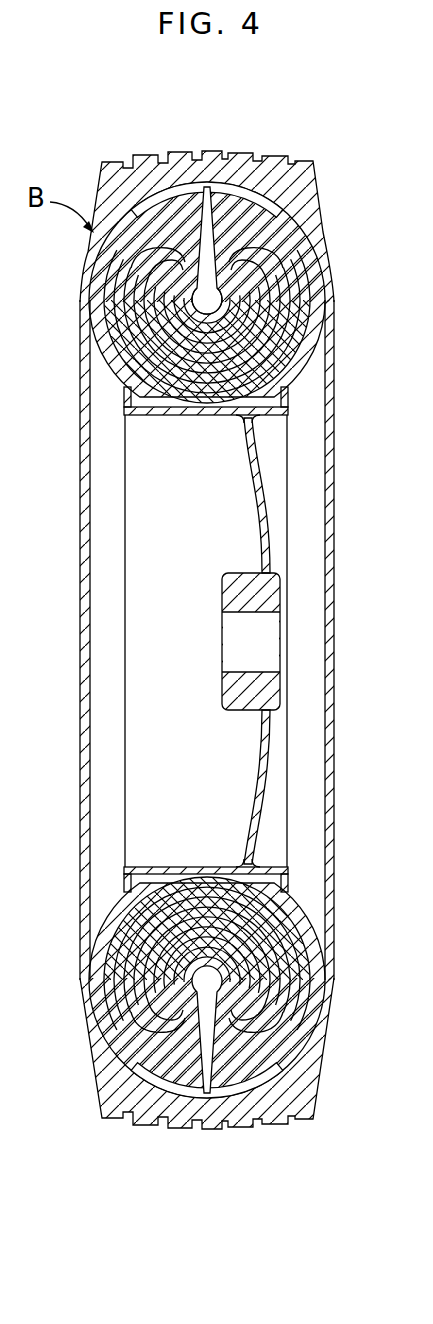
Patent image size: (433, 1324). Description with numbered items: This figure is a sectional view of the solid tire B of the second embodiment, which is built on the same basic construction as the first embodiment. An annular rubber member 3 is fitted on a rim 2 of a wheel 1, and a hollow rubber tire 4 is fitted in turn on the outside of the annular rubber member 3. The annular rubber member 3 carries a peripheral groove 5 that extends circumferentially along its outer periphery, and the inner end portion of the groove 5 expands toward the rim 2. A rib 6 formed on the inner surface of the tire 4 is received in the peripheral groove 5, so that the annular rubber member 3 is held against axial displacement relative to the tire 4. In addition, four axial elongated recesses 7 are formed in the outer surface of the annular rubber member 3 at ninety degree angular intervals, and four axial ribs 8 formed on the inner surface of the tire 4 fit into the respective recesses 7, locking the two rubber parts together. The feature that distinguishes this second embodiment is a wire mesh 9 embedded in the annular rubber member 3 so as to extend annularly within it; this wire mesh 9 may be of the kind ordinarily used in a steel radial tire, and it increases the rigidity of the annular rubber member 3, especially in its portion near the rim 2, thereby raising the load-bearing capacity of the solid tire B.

The wheel 1 is at (268, 528).
The rim 2 is at (157, 417).
The annular rubber member 3 is at (297, 243).
The hollow rubber tire 4 is at (270, 162).
The peripheral groove 5 is at (210, 298).
The rib 6 is at (209, 186).
The axial elongated recesses 7 is at (280, 192).
The axial ribs 8 is at (162, 195).
The wire mesh 9 is at (320, 350).